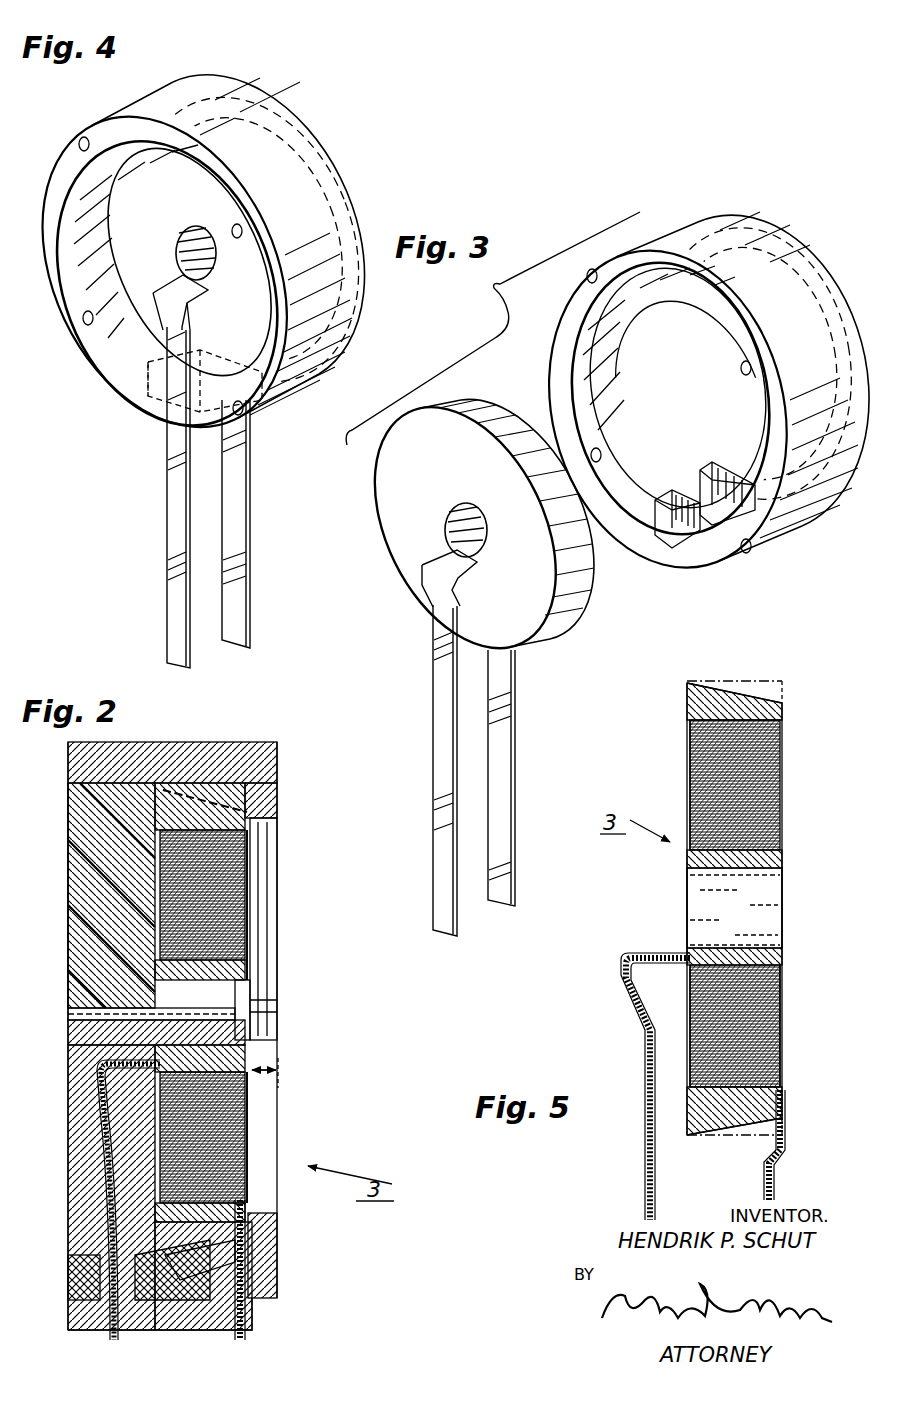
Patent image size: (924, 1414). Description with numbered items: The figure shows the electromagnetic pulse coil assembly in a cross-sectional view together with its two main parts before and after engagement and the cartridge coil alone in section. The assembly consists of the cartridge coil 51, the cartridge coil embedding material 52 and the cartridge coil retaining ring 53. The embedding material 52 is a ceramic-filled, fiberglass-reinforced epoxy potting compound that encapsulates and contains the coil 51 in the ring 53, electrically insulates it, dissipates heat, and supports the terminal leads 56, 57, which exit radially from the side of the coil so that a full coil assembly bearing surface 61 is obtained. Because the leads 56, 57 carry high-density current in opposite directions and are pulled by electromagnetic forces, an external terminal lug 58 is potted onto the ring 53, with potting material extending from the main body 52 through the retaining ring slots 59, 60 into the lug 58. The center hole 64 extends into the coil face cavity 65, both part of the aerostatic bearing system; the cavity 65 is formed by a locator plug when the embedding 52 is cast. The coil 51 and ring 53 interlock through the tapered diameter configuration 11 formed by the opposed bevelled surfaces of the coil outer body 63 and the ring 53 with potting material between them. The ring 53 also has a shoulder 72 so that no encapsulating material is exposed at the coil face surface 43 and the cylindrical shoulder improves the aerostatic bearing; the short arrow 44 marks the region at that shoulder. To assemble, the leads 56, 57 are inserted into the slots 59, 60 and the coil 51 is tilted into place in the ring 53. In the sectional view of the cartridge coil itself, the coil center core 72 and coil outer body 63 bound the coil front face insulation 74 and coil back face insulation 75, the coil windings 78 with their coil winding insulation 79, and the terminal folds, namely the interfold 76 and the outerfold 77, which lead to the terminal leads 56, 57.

In FIG. 2, the tapered diameter configuration 11 is at (175, 790).
In FIG. 5, the tapered diameter configuration 11 is at (760, 696).
In FIG. 2, the coil face surface 43 is at (250, 1088).
In FIG. 2, the air gap 44 is at (280, 1066).
In FIG. 4, the cartridge coil 51 is at (166, 218).
In FIG. 3, the cartridge coil 51 is at (397, 503).
In FIG. 2, the cartridge coil 51 is at (250, 942).
In FIG. 2, the cartridge coil embedding material 52 is at (86, 876).
In FIG. 4, the cartridge coil retaining ring 53 is at (272, 118).
In FIG. 3, the cartridge coil retaining ring 53 is at (758, 238).
In FIG. 2, the cartridge coil retaining ring 53 is at (262, 781).
In FIG. 4, the terminal lead 56 is at (175, 522).
In FIG. 3, the terminal lead 56 is at (440, 688).
In FIG. 2, the terminal lead 56 is at (78, 1128).
In FIG. 5, the terminal lead 56 is at (644, 1174).
In FIG. 4, the terminal lead 57 is at (236, 532).
In FIG. 3, the terminal lead 57 is at (500, 694).
In FIG. 2, the terminal lead 57 is at (247, 1340).
In FIG. 5, the terminal lead 57 is at (775, 1178).
In FIG. 2, the external terminal lug 58 is at (80, 1320).
In FIG. 3, the retaining ring slot 59 is at (700, 518).
In FIG. 2, the retaining ring slot 59 is at (98, 1260).
In FIG. 3, the retaining ring slot 60 is at (748, 496).
In FIG. 2, the retaining ring slot 60 is at (226, 1264).
In FIG. 2, the coil assembly bearing surface 61 is at (66, 940).
In FIG. 2, the coil outer body 63 is at (200, 806).
In FIG. 5, the coil outer body 63 is at (722, 697).
In FIG. 2, the center hole 64 is at (88, 1016).
In FIG. 2, the coil face cavity 65 is at (242, 1032).
In FIG. 2, the shoulder 72 is at (270, 834).
In FIG. 5, the shoulder 72 is at (748, 947).
In FIG. 5, the coil front face insulation 74 is at (785, 780).
In FIG. 5, the coil back face insulation 75 is at (690, 780).
In FIG. 5, the interfold 76 is at (700, 947).
In FIG. 5, the outerfold 77 is at (780, 1112).
In FIG. 5, the coil windings 78 is at (780, 1000).
In FIG. 5, the coil winding insulation 79 is at (780, 1032).